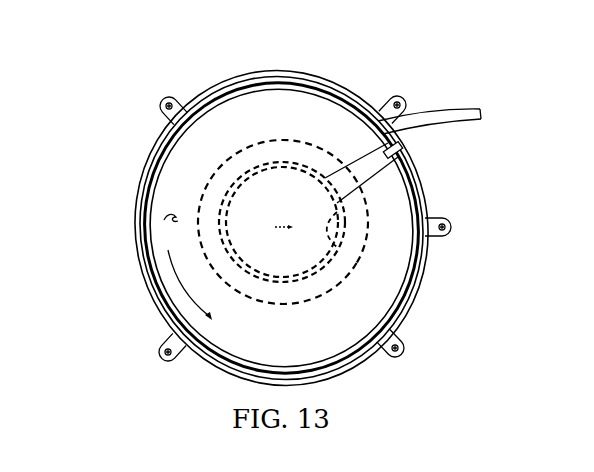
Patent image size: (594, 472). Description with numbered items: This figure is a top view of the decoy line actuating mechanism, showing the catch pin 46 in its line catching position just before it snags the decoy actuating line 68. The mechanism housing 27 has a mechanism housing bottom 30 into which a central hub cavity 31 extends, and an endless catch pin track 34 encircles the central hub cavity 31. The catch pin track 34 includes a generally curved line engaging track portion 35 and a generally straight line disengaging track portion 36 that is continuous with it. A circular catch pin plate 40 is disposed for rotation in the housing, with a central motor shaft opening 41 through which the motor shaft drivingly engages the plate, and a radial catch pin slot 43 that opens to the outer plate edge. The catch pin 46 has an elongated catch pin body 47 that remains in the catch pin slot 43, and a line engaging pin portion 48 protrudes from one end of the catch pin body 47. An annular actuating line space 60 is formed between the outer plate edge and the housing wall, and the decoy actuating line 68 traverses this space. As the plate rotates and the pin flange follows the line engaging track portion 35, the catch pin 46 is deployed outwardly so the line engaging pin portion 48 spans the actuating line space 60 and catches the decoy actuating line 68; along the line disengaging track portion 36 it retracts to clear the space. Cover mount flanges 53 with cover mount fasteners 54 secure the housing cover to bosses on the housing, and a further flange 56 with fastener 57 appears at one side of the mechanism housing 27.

The mechanism housing 27 is at (338, 70).
The mechanism housing bottom 30 is at (168, 217).
The central hub cavity 31 is at (342, 262).
The catch pin track 34 is at (222, 168).
The line engaging track portion 35 is at (277, 140).
The line disengaging track portion 36 is at (322, 293).
The catch pin plate 40 is at (158, 297).
The central motor shaft opening 41 is at (290, 229).
The catch pin slot 43 is at (352, 182).
The catch pin 46 is at (380, 180).
The catch pin body 47 is at (370, 168).
The line engaging pin portion 48 is at (408, 137).
The cover mount flanges 53 is at (162, 116).
The cover mount fasteners 54 is at (169, 98).
The side tab 56 is at (452, 220).
The side fastener 57 is at (453, 224).
The annular actuating line space 60 is at (425, 293).
The decoy actuating line 68 is at (462, 108).